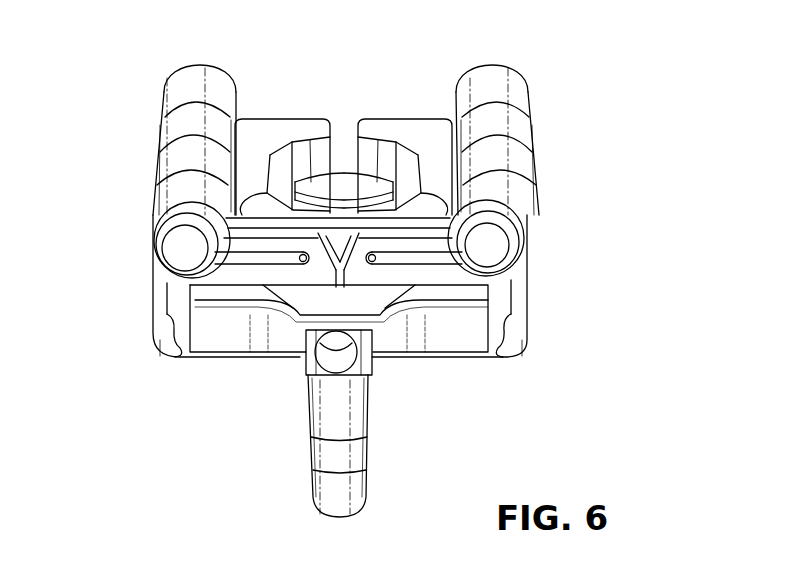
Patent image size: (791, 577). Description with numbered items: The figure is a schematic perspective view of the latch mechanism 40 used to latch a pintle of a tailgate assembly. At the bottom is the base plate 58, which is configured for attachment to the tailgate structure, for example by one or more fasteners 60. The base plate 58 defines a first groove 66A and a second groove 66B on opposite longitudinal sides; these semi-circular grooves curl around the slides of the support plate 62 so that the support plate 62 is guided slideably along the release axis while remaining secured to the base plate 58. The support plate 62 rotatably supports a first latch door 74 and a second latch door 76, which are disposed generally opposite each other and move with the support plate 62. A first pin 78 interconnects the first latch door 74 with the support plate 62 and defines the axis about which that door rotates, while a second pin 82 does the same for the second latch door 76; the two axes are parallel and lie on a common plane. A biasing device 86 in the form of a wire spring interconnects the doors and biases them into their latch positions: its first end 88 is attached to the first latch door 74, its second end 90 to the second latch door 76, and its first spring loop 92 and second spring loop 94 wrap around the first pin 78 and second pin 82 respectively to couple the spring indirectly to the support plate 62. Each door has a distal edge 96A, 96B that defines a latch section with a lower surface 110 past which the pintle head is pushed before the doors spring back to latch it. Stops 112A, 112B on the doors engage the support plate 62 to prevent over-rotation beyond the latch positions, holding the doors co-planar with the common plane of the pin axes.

The latch mechanism 40 is at (346, 262).
The base plate 58 is at (530, 280).
The fastener 60 is at (360, 427).
The support plate 62 is at (452, 357).
The first groove 66A is at (178, 350).
The second groove 66B is at (503, 350).
The first latch door 74 is at (261, 162).
The second latch door 76 is at (427, 137).
The first pin 78 is at (180, 253).
The second pin 82 is at (493, 248).
The biasing device 86 is at (325, 224).
The first end 88 is at (303, 264).
The second end 90 is at (372, 264).
The first spring loop 92 is at (180, 217).
The second spring loop 94 is at (530, 207).
The distal edge of the first latch door 96A is at (310, 188).
The distal edge of the second latch door 96B is at (345, 172).
The lower surface 110 is at (320, 292).
The stop of the first latch door 112A is at (175, 288).
The stop of the second latch door 112B is at (505, 288).